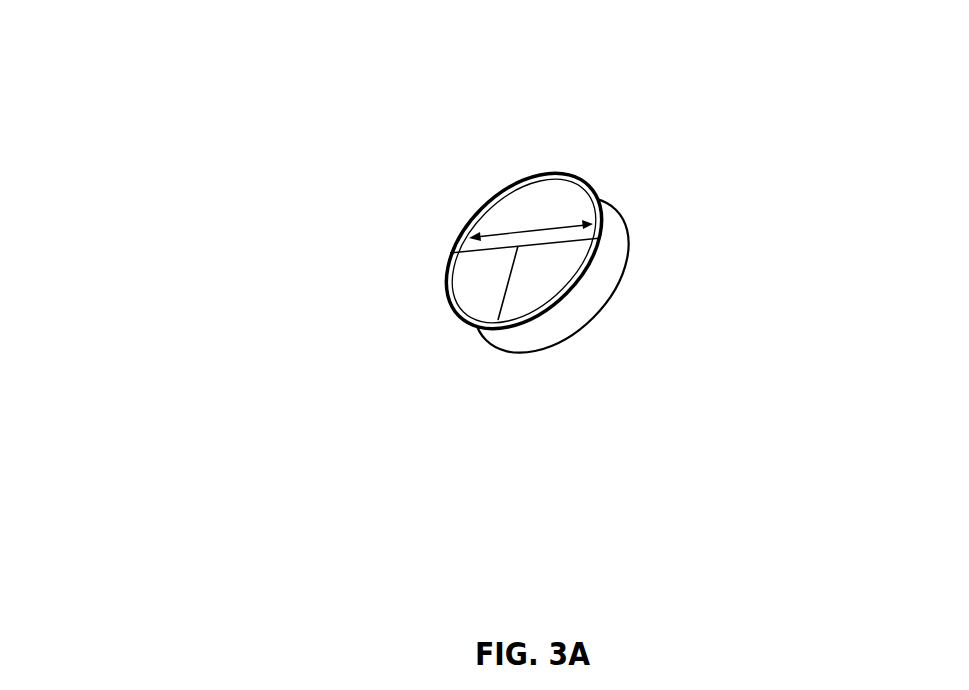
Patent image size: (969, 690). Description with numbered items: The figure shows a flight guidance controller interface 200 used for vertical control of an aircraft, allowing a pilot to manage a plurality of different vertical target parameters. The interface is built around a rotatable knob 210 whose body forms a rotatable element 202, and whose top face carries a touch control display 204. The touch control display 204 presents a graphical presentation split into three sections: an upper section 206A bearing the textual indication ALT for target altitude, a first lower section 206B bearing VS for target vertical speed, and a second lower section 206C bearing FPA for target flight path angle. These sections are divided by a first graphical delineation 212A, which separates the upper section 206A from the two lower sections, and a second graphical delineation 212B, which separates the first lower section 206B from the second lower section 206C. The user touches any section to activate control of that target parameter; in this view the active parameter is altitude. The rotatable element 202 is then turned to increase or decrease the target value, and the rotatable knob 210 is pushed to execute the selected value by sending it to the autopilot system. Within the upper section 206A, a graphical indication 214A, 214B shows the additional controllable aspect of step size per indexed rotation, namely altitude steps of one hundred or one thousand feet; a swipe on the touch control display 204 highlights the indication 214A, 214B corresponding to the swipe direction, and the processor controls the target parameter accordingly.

The flight guidance controller interface 200 is at (354, 114).
The rotatable element 202 is at (603, 293).
The touch control display 204 is at (565, 205).
The upper section 206A is at (502, 222).
The first lower section 206B is at (466, 262).
The second lower section 206C is at (568, 250).
The rotatable knob 210 is at (639, 405).
The first graphical delineation 212A is at (487, 252).
The second graphical delineation 212B is at (503, 302).
The graphical indication 214A is at (472, 215).
The graphical indication 214B is at (585, 209).